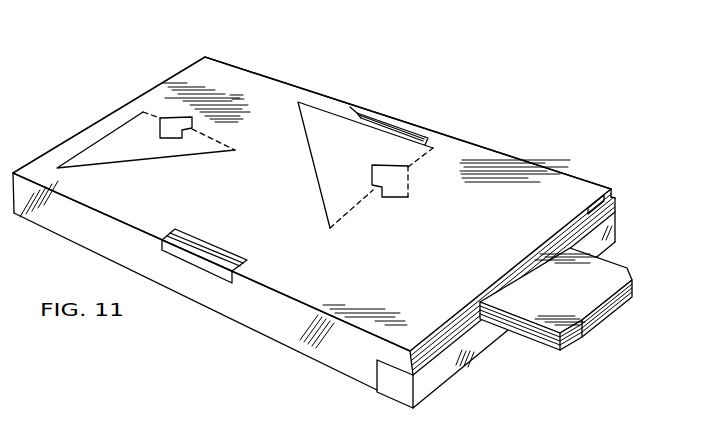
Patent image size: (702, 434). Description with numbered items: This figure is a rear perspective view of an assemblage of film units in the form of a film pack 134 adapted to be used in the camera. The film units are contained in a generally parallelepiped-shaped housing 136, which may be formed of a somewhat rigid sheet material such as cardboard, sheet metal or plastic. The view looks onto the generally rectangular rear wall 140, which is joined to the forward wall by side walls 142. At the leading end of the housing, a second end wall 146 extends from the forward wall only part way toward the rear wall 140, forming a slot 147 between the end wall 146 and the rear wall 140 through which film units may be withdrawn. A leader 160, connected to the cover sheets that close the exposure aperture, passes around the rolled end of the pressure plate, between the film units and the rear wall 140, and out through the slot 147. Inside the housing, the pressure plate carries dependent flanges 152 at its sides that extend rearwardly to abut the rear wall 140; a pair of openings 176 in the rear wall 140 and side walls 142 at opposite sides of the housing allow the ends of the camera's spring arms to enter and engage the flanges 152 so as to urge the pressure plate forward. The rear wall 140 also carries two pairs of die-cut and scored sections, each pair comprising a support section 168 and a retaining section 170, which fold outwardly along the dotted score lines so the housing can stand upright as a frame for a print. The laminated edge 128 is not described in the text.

The film pack 134 is at (307, 63).
The housing 136 is at (480, 148).
The rear wall 140 is at (420, 270).
The side walls 142 is at (347, 355).
The second end wall 146 is at (453, 360).
The slot 147 is at (590, 207).
The flanges 152 is at (400, 128).
The leader 160 is at (617, 277).
The laminations 128 is at (600, 326).
The support section 168 is at (333, 167).
The retaining section 170 is at (168, 130).
The openings 176 is at (362, 113).